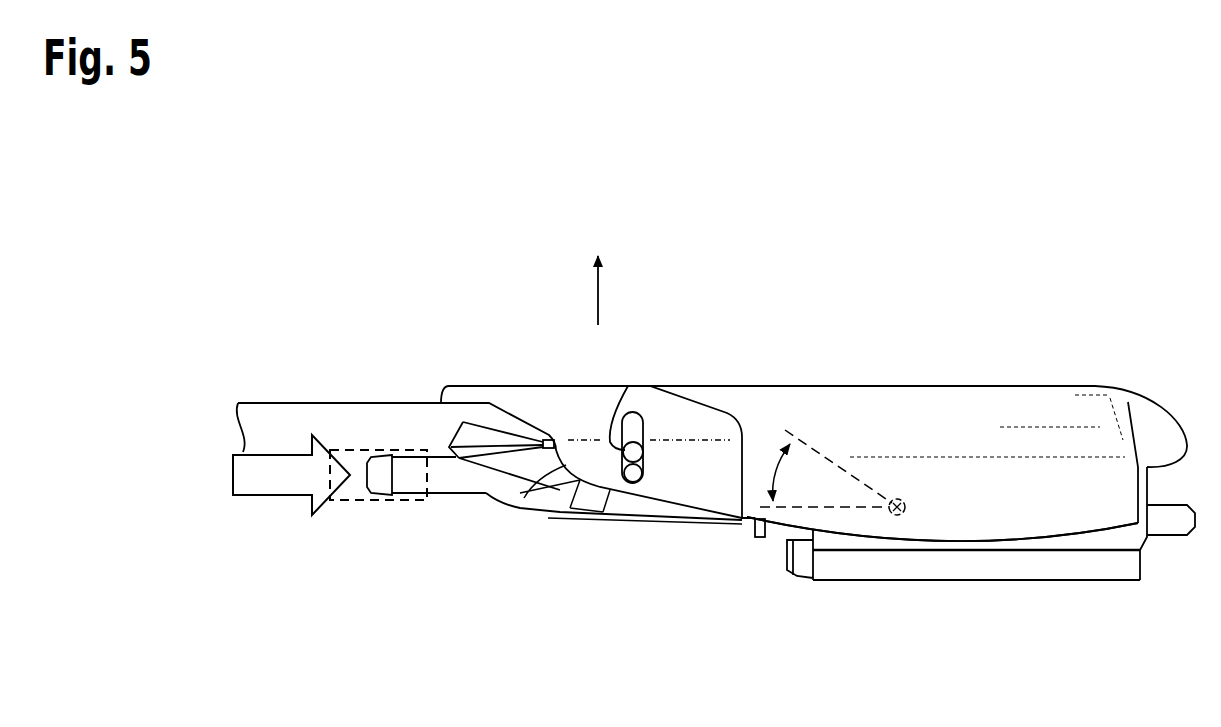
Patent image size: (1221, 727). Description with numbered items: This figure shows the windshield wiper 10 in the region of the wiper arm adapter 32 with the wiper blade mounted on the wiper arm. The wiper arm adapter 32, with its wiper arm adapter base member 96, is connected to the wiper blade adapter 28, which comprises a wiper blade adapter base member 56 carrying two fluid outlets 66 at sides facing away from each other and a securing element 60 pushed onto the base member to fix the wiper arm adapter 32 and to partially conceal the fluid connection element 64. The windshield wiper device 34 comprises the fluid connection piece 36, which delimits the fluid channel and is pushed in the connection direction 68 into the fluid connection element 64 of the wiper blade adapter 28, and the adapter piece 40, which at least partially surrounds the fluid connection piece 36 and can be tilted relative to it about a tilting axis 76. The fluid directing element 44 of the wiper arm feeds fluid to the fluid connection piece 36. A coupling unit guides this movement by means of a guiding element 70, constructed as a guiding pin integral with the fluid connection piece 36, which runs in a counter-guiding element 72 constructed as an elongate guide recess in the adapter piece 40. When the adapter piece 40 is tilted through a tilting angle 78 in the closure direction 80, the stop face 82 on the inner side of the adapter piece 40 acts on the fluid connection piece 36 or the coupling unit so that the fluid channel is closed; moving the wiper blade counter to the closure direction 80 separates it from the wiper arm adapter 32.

The windshield wiper 10 is at (1110, 255).
The wiper blade adapter 28 is at (918, 604).
The wiper arm adapter 32 is at (286, 357).
The windshield wiper device 34 is at (508, 343).
The fluid connection piece 36 is at (469, 478).
The adapter piece 40 is at (568, 400).
The fluid directing element 44 is at (358, 480).
The wiper blade adapter base member 56 is at (1035, 567).
The securing element 60 is at (978, 410).
The fluid connection element 64 is at (1113, 538).
The fluid outlets 66 is at (767, 527).
The connection direction 68 is at (272, 477).
The guiding element 70 is at (627, 410).
The counter-guiding element 72 is at (631, 484).
The tilting axis 76 is at (897, 499).
The tilting angle 78 is at (777, 478).
The closure direction 80 is at (600, 281).
The stop face 82 is at (582, 512).
The wiper arm adapter base member 96 is at (385, 400).